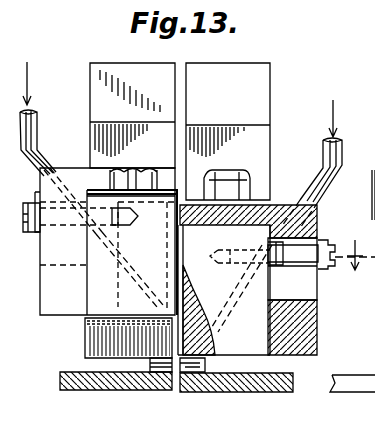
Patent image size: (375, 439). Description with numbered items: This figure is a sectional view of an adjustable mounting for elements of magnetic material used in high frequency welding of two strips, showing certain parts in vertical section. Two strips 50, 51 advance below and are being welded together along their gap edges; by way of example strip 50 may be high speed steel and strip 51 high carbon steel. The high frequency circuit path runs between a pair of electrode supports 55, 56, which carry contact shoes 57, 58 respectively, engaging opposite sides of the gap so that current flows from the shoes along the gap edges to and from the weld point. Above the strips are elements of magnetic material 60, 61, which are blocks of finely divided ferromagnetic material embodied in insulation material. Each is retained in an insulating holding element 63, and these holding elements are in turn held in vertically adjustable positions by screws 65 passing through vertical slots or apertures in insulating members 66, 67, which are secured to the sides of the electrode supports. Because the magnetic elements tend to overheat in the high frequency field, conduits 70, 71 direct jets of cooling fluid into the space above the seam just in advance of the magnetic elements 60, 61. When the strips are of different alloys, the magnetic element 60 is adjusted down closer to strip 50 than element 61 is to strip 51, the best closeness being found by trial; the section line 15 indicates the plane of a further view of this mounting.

The section line 15— 15 is at (353, 270).
The strip 50 is at (257, 392).
The strip 51 is at (87, 392).
The electrode support 55 is at (92, 70).
The electrode support 56 is at (265, 68).
The contact shoe 57 is at (162, 375).
The contact shoe 58 is at (202, 392).
The element of magnetic material 60 is at (190, 283).
The element of magnetic material 61 is at (98, 335).
The insulating holding element 63 is at (97, 308).
The screw 65 is at (34, 232).
The insulating member 66 is at (318, 210).
The insulating member 67 is at (53, 289).
The conduit 70 is at (324, 143).
The conduit 71 is at (40, 132).